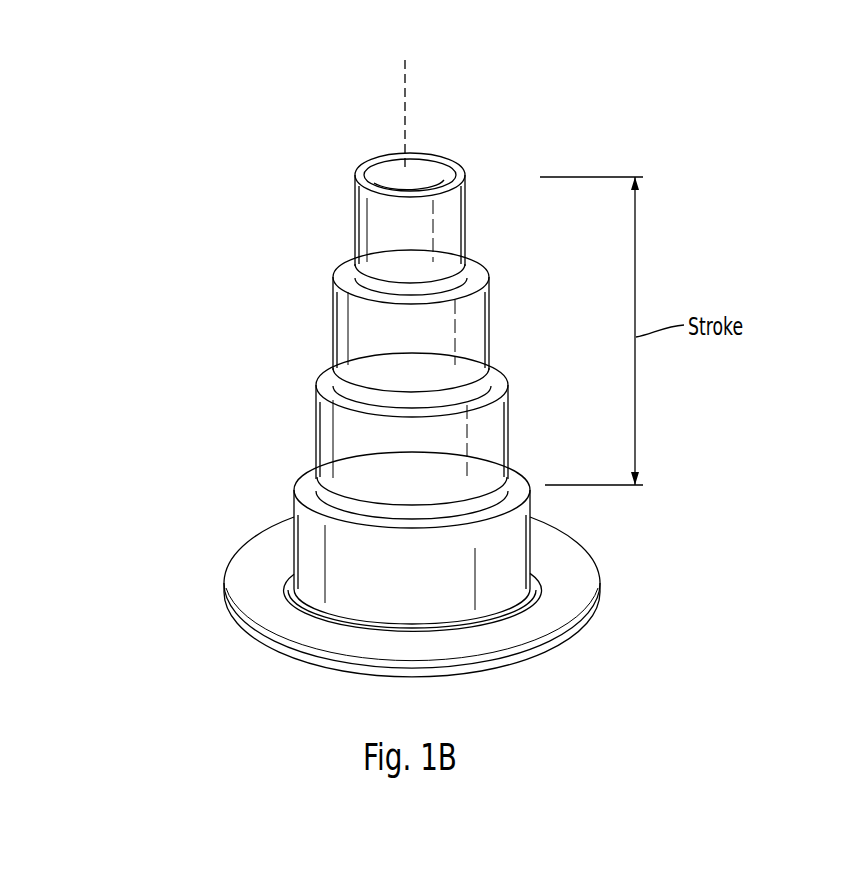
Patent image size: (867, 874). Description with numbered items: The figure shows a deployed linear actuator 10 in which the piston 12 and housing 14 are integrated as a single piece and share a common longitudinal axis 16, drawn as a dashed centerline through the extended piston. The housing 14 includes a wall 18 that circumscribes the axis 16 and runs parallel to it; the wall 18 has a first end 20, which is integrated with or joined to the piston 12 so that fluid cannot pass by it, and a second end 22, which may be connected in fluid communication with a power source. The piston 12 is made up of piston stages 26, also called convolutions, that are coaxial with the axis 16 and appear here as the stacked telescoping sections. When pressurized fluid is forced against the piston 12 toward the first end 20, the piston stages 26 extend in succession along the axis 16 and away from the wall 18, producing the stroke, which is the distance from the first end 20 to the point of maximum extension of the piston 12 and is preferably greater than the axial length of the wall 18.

The linear actuator 10 is at (176, 266).
The piston 12 is at (285, 168).
The housing 14 is at (328, 570).
The longitudinal axis 16 is at (407, 93).
The wall 18 is at (513, 538).
The first end 20 is at (533, 470).
The second end 22 is at (505, 628).
The piston stages 26 is at (336, 168).